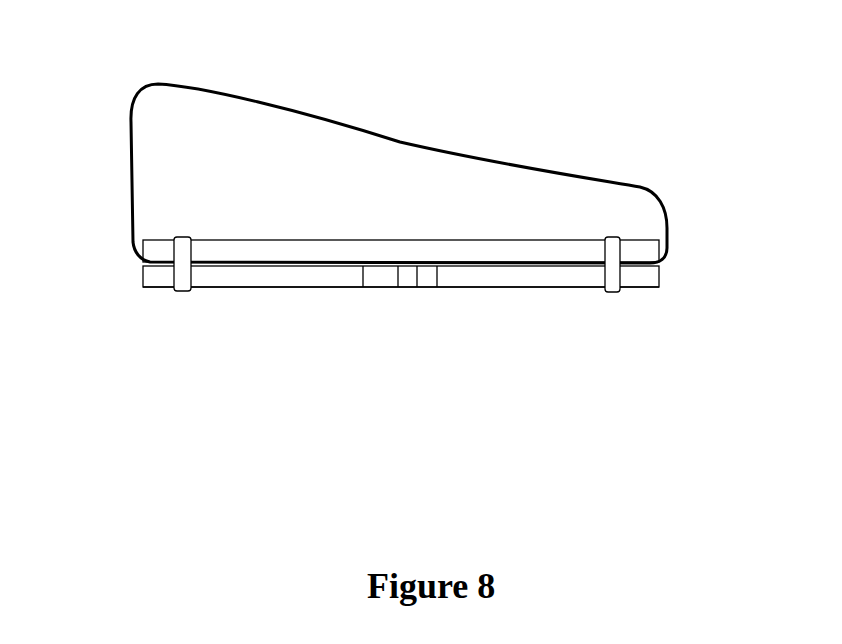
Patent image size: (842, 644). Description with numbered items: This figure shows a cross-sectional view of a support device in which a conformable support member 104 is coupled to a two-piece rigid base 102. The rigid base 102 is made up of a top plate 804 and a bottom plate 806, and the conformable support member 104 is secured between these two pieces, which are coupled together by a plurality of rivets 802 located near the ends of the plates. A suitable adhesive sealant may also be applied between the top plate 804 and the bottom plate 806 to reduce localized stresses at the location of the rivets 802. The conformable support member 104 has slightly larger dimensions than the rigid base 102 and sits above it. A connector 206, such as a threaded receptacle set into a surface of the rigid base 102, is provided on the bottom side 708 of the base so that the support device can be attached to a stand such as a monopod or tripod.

The rigid base 102 is at (505, 228).
The conformable support member 104 is at (383, 185).
The connector 206 is at (395, 295).
The bottom side 708 is at (572, 292).
The rivets 802 is at (182, 268).
The top plate 804 is at (288, 247).
The bottom plate 806 is at (495, 278).